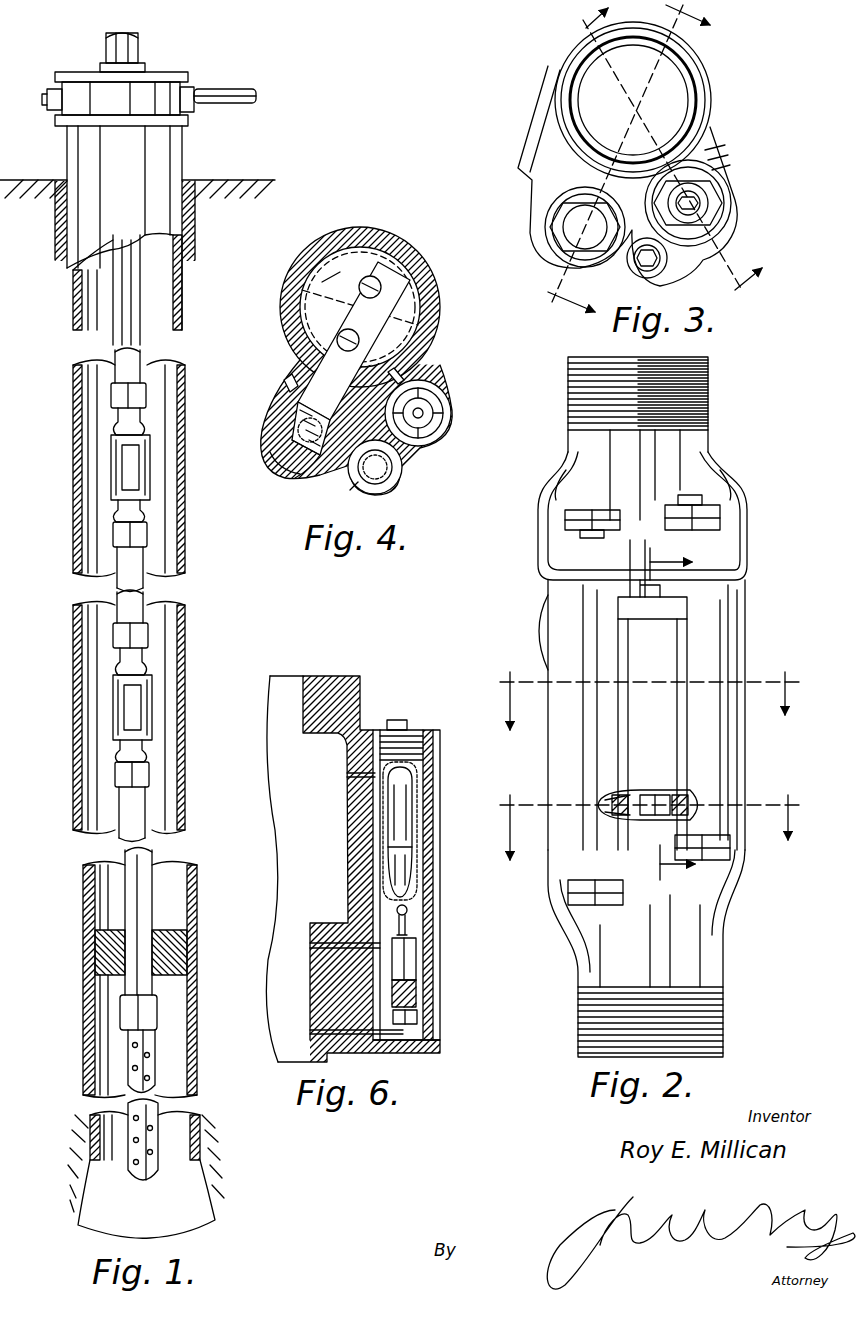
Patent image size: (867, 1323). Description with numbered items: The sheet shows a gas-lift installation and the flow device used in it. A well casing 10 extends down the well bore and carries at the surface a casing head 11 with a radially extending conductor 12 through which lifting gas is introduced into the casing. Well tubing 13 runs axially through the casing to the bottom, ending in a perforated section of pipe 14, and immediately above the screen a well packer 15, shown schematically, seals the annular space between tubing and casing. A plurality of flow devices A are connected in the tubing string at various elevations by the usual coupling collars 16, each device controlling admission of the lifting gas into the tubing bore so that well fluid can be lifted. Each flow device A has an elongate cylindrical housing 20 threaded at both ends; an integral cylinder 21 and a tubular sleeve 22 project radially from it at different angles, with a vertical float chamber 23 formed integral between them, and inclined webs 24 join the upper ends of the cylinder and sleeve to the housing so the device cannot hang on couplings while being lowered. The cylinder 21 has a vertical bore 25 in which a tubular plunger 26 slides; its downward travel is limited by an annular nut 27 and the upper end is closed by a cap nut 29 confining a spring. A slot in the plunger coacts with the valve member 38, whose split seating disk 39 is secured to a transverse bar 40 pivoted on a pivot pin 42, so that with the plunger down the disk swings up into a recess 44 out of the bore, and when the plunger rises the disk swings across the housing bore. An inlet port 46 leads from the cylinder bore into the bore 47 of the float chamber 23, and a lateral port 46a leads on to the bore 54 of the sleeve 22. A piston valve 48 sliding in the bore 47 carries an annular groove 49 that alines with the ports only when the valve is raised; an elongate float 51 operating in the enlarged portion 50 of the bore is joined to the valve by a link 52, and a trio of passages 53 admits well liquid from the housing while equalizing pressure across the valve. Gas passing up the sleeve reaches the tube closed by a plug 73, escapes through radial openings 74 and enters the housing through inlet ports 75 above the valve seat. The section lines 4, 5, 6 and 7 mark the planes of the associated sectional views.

In FIG. 1, the well casing 10 is at (185, 403).
In FIG. 1, the casing head 11 is at (150, 92).
In FIG. 3, the casing head 11 is at (635, 163).
In FIG. 1, the conductor 12 is at (232, 93).
In FIG. 1, the well tubing 13 is at (110, 50).
In FIG. 1, the perforated section of pipe 14 is at (128, 1062).
In FIG. 1, the well packer 15 is at (95, 948).
In FIG. 1, the coupling collars 16 is at (118, 396).
In FIG. 1, the flow device A is at (120, 465).
In FIG. 4, the housing 20 is at (378, 240).
In FIG. 3, the housing 20 is at (712, 68).
In FIG. 2, the housing 20 is at (655, 452).
In FIG. 4, the cylinder 21 is at (272, 455).
In FIG. 3, the cylinder 21 is at (545, 228).
In FIG. 2, the cylinder 21 is at (562, 623).
In FIG. 4, the sleeve 22 is at (452, 395).
In FIG. 3, the sleeve 22 is at (732, 200).
In FIG. 2, the sleeve 22 is at (718, 616).
In FIG. 4, the float chamber 23 is at (398, 480).
In FIG. 3, the float chamber 23 is at (665, 274).
In FIG. 2, the float chamber 23 is at (638, 722).
In FIG. 6, the float chamber 23 is at (440, 803).
In FIG. 3, the inclined webs 24 is at (555, 150).
In FIG. 2, the inclined webs 24 is at (560, 470).
In FIG. 4, the vertical bore 25 is at (292, 435).
In FIG. 4, the plunger 26 is at (298, 475).
In FIG. 2, the annular nut 27 is at (598, 905).
In FIG. 3, the cap nut 29 is at (572, 252).
In FIG. 2, the cap nut 29 is at (592, 508).
In FIG. 4, the valve member 38 is at (400, 310).
In FIG. 4, the split seating disk 39 is at (400, 288).
In FIG. 4, the bar 40 is at (340, 323).
In FIG. 4, the pivot pin 42 is at (285, 380).
In FIG. 6, the recess 44 is at (300, 730).
In FIG. 2, the inlet port 46 is at (612, 785).
In FIG. 2, the lateral port 46a is at (682, 790).
In FIG. 6, the bore of the float chamber 47 is at (418, 1018).
In FIG. 6, the piston valve 48 is at (418, 978).
In FIG. 2, the annular groove 49 is at (655, 790).
In FIG. 6, the annular groove 49 is at (418, 998).
In FIG. 4, the enlarged portion of the bore 50 is at (355, 488).
In FIG. 6, the enlarged portion of the bore 50 is at (428, 778).
In FIG. 4, the float 51 is at (392, 465).
In FIG. 6, the float 51 is at (410, 860).
In FIG. 6, the link 52 is at (410, 920).
In FIG. 6, the passages 53 is at (352, 772).
In FIG. 4, the bore of the sleeve 54 is at (440, 425).
In FIG. 3, the plug 73 is at (700, 212).
In FIG. 2, the plug 73 is at (710, 498).
In FIG. 4, the radial openings 74 is at (445, 413).
In FIG. 4, the inlet ports 75 is at (440, 372).
In FIG. 2, the section line 4— 4 is at (643, 701).
In FIG. 2, the section line 5— 5 is at (647, 827).
In FIG. 2, the section line 6— 6 is at (682, 714).
In FIG. 3, the section line 7— 7 is at (672, 152).